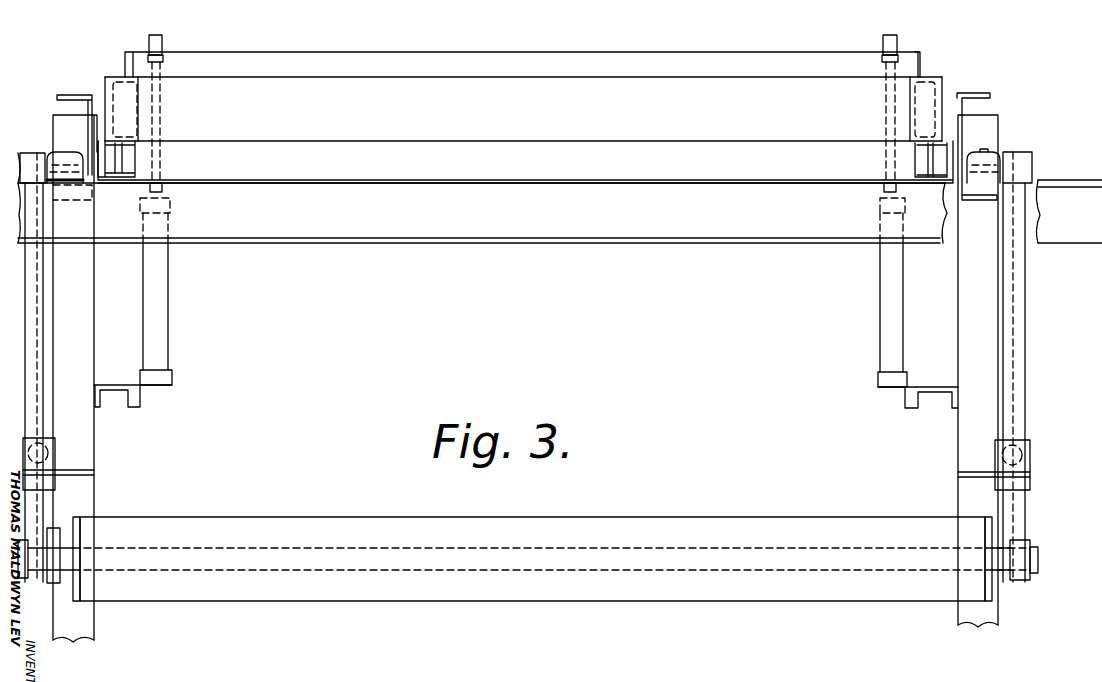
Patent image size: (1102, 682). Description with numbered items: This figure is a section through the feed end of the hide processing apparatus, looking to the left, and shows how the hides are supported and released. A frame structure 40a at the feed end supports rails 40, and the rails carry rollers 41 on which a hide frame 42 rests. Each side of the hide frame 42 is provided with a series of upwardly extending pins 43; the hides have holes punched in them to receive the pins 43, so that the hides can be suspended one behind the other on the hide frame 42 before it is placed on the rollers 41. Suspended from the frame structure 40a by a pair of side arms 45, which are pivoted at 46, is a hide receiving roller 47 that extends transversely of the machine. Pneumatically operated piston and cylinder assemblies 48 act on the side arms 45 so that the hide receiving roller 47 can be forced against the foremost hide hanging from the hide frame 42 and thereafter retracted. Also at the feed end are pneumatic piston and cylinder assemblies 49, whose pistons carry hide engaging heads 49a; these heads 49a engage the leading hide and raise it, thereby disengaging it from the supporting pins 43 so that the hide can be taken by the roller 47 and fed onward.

The rails 40 is at (131, 177).
The frame structure 40a is at (80, 337).
The rollers 41 is at (127, 157).
The hide frame 42 is at (378, 92).
The upwardly extending pins 43 is at (125, 63).
The side arms 45 is at (37, 393).
The pivot 46 is at (65, 163).
The hide receiving roller 47 is at (902, 530).
The pneumatically operated piston and cylinder assemblies 48 is at (47, 455).
The pneumatic piston and cylinder assemblies 49 is at (165, 302).
The hide engaging heads 49a is at (163, 40).